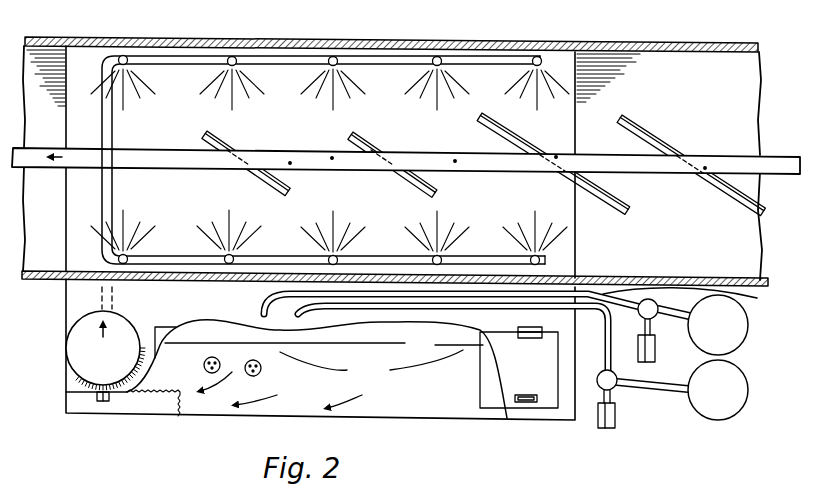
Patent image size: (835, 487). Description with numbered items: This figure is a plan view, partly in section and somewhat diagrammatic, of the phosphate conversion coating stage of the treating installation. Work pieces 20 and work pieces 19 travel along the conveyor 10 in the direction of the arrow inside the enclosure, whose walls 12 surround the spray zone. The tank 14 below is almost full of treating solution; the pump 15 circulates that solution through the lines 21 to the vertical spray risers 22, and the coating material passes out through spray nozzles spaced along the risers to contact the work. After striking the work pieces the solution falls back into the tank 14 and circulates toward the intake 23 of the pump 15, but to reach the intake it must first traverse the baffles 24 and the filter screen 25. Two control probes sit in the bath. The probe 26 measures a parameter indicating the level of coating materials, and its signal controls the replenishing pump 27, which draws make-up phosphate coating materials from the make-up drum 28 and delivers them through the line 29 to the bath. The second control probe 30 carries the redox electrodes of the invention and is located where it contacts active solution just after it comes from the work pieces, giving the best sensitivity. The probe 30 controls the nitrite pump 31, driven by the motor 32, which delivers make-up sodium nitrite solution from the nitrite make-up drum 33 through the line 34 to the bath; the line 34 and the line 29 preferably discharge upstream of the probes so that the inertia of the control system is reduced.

The conveyor 10 is at (773, 177).
The insulated housing 12 is at (60, 37).
The tank 14 is at (436, 420).
The pump 15 is at (72, 348).
The work pieces 19 is at (655, 132).
The work pieces 20 is at (222, 136).
The lines 21 is at (292, 256).
The spray risers 22 is at (330, 58).
The intake 23 is at (103, 413).
The baffles 24 is at (397, 352).
The filter screen 25 is at (133, 407).
The probe 26 is at (261, 372).
The replenishing pump 27 is at (615, 385).
The make-up drum 28 is at (737, 413).
The line 29 is at (490, 311).
The control probe 30 is at (202, 367).
The pump 31 is at (654, 318).
The motor 32 is at (656, 350).
The nitrite make-up drum 33 is at (747, 345).
The line 34 is at (750, 297).